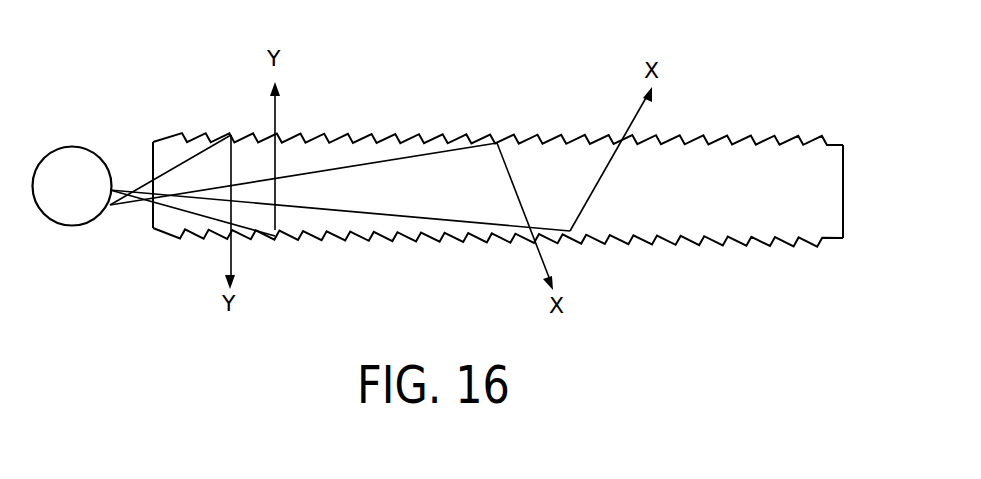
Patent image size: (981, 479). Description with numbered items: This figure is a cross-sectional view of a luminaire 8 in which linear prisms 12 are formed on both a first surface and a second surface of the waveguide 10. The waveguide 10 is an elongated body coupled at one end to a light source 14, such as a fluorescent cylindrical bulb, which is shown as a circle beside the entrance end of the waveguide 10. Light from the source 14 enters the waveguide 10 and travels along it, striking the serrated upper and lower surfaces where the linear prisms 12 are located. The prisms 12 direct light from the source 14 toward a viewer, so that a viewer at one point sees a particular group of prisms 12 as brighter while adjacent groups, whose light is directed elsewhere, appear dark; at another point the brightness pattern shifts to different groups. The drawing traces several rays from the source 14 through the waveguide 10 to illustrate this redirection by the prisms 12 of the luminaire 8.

The luminaire 8 is at (511, 93).
The waveguide 10 is at (530, 200).
The linear prisms 12 is at (777, 142).
The light source 14 is at (62, 212).